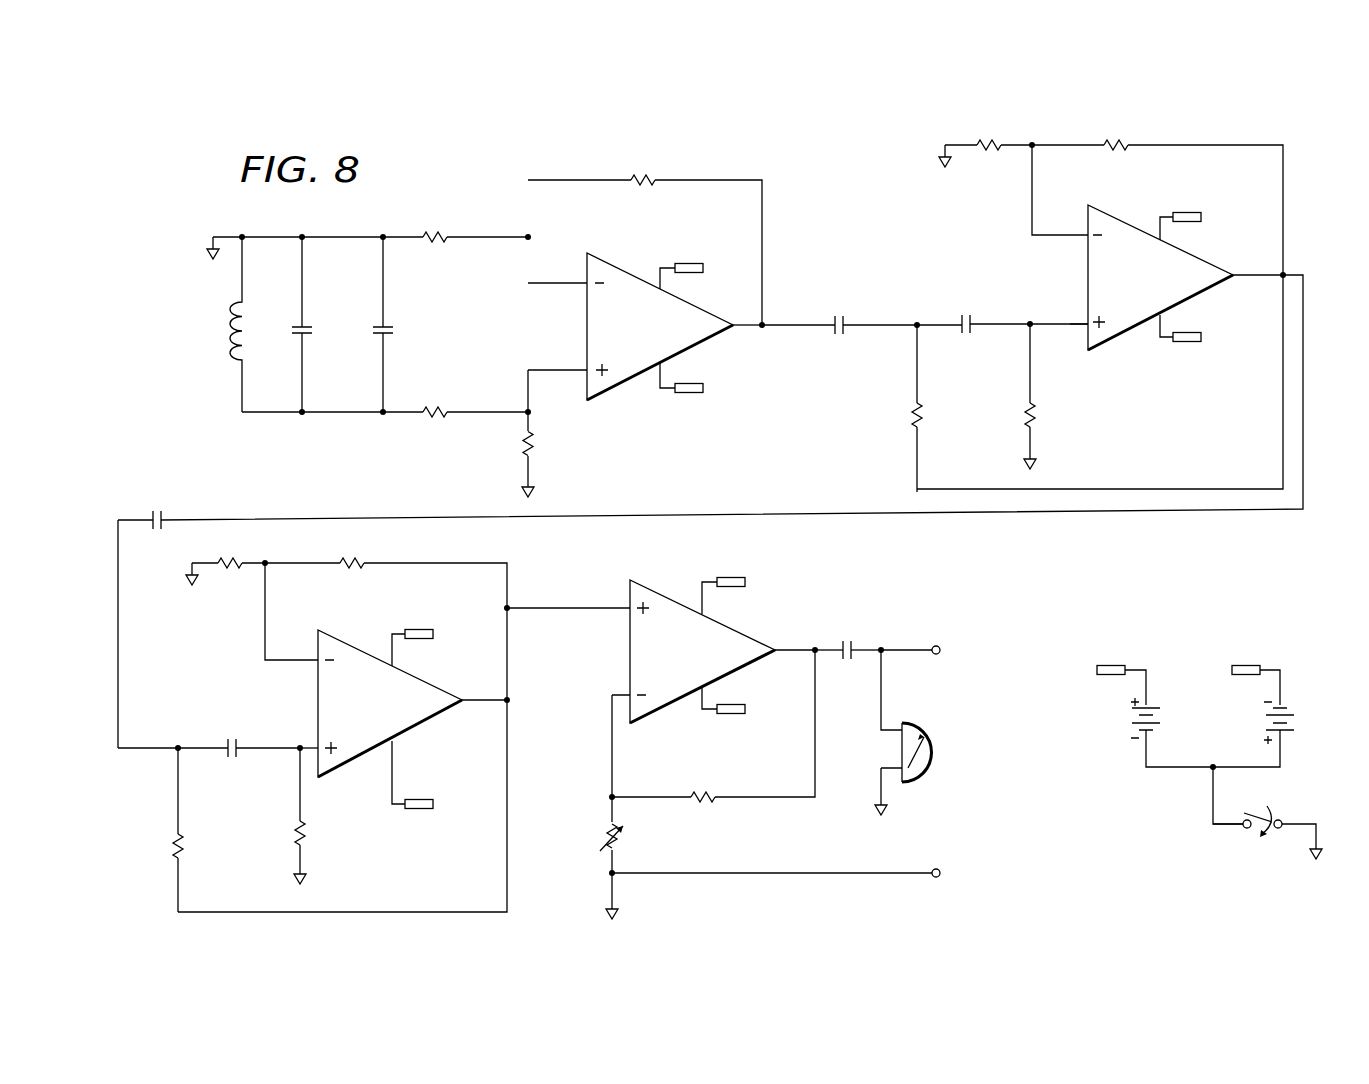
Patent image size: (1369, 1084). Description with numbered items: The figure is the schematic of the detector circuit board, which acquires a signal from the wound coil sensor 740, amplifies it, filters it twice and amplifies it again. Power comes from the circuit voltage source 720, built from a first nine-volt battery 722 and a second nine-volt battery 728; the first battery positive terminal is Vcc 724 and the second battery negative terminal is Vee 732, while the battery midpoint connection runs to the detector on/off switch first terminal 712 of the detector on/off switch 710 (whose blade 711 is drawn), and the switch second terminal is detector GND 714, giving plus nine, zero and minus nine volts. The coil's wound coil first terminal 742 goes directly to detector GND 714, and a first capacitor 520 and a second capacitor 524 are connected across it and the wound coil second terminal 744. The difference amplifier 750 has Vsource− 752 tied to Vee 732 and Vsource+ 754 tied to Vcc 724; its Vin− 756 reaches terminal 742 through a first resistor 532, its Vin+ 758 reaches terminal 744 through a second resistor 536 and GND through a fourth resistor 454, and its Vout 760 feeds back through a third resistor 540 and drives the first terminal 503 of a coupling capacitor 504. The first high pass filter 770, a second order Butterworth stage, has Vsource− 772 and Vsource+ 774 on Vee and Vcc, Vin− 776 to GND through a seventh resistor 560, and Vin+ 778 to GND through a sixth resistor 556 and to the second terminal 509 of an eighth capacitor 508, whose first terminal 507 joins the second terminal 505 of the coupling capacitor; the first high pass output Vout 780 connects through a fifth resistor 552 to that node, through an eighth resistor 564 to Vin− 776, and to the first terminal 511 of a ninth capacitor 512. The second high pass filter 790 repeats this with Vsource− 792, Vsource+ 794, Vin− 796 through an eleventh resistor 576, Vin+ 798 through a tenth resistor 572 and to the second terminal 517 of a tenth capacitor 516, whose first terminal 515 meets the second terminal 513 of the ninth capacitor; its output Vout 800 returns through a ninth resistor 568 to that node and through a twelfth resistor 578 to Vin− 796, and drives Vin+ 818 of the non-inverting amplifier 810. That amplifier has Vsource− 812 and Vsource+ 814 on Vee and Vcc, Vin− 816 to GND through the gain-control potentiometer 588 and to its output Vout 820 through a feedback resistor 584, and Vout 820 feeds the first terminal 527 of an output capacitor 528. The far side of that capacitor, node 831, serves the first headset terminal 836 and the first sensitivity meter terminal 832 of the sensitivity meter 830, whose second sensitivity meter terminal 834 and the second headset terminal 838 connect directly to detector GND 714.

The detector GND 714 is at (209, 252).
The wound coil sensor 740 is at (233, 358).
The wound coil first terminal 742 is at (246, 242).
The wound coil second terminal 744 is at (248, 405).
The capacitor C11 520 is at (314, 325).
The capacitor C12 524 is at (370, 335).
The resistor R1 532 is at (437, 245).
The resistor R2 536 is at (437, 405).
The resistor R3 540 is at (637, 176).
The resistor R4 454 is at (522, 447).
The difference amplifier 750 is at (584, 323).
The difference amplifier input Vsource− 752 is at (656, 270).
The difference amplifier input Vsource+ 754 is at (656, 383).
The difference amplifier input Vin− 756 is at (582, 280).
The difference amplifier input Vin+ 758 is at (582, 375).
The difference amplifier output Vout 760 is at (737, 329).
The Vee 732 is at (690, 262).
The Vcc 724 is at (690, 395).
The first terminal of capacitor C7 503 is at (766, 321).
The capacitor C7 504 is at (838, 335).
The second terminal of capacitor C7 505 is at (914, 320).
The first terminal of capacitor C8 507 is at (913, 329).
The capacitor C8 508 is at (965, 334).
The second terminal of capacitor C8 509 is at (1027, 330).
The resistor R5 552 is at (911, 414).
The resistor R6 556 is at (1036, 413).
The resistor R7 560 is at (993, 158).
The resistor R8 564 is at (1112, 158).
The first high pass filter 770 is at (1086, 275).
The first high pass input Vsource− 772 is at (1156, 228).
The first high pass input Vsource+ 774 is at (1156, 332).
The first high pass input Vin− 776 is at (1082, 232).
The first high pass input Vin+ 778 is at (1085, 329).
The first high pass output Vout 780 is at (1237, 280).
The first terminal of capacitor C9 511 is at (1286, 272).
The capacitor C9 512 is at (157, 534).
The resistor R11 576 is at (229, 572).
The resistor R12 578 is at (348, 572).
The second high pass filter 790 is at (352, 772).
The second high pass input Vsource− 792 is at (388, 660).
The second high pass input Vsource+ 794 is at (396, 746).
The second high pass input Vin− 796 is at (313, 657).
The second high pass input Vin+ 798 is at (313, 745).
The second high pass output Vout 800 is at (466, 705).
The second terminal of capacitor C9 513 is at (176, 752).
The first terminal of capacitor C10 515 is at (178, 744).
The capacitor C10 516 is at (232, 760).
The second terminal of capacitor C10 517 is at (298, 752).
The resistor R9 568 is at (186, 848).
The resistor R10 572 is at (306, 834).
The non-inverting amplifier 810 is at (657, 588).
The non-inverting amplifier input Vsource− 812 is at (698, 710).
The non-inverting amplifier input Vsource+ 814 is at (698, 600).
The non-inverting amplifier input Vin− 816 is at (625, 693).
The non-inverting amplifier input Vin+ 818 is at (625, 605).
The non-inverting amplifier output Vout 820 is at (778, 647).
The first terminal of capacitor C13 527 is at (809, 655).
The capacitor C13 528 is at (850, 662).
The node 831 is at (884, 652).
The first headset terminal 836 is at (934, 645).
The first sensitivity meter terminal 832 is at (895, 735).
The second sensitivity meter terminal 834 is at (895, 768).
The sensitivity meter 830 is at (921, 780).
The second headset terminal 838 is at (934, 879).
The resistor R24 584 is at (712, 804).
The resistor R25 588 is at (620, 845).
The circuit voltage source 720 is at (1172, 653).
The first 9V battery 722 is at (1130, 716).
The second 9V battery 728 is at (1262, 722).
The detector on/off switch 710 is at (1296, 793).
The detector on/off switch first terminal 712 is at (1243, 829).
The switch blade 711 is at (1274, 836).